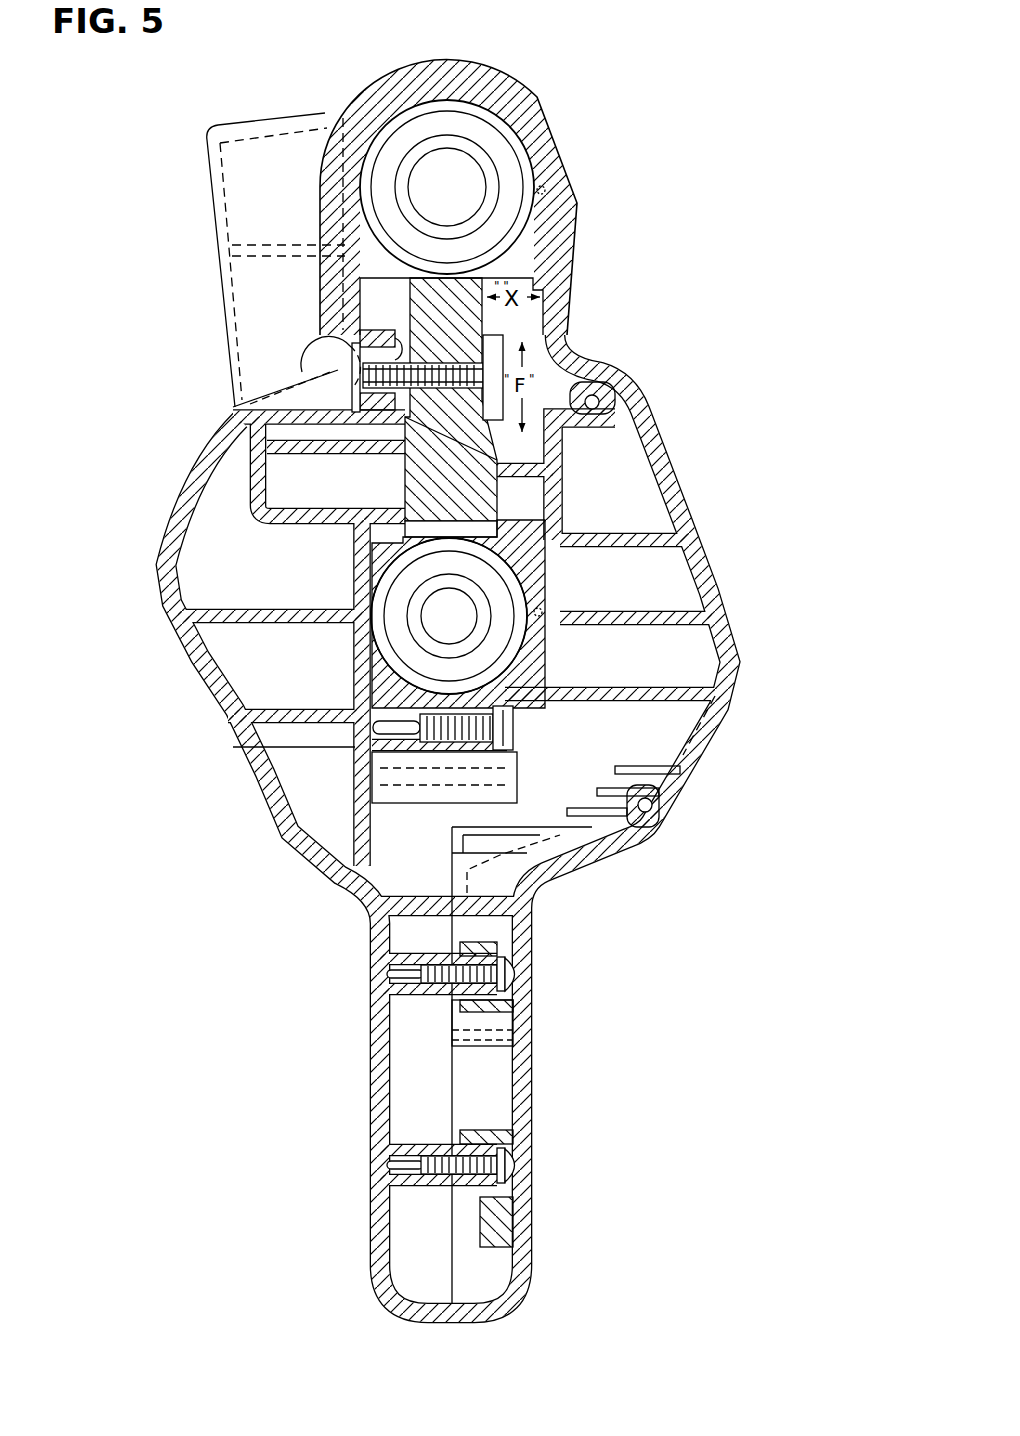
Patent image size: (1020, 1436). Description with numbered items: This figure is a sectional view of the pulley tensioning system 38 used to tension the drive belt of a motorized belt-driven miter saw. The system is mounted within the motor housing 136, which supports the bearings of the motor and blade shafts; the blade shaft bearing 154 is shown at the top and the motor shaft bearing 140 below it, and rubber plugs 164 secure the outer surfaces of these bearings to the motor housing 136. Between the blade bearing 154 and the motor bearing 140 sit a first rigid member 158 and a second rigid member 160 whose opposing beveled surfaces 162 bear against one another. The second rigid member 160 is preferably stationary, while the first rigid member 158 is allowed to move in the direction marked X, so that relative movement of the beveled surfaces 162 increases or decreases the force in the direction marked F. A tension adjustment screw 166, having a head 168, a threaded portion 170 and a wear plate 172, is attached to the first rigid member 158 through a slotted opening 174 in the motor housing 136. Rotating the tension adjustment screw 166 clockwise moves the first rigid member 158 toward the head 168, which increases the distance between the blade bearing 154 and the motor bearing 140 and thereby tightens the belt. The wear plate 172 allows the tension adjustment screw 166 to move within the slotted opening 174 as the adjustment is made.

The pulley tensioning system 38 is at (650, 343).
The motor housing 136 is at (695, 540).
The motor shaft bearing 140 is at (522, 578).
The blade shaft bearing 154 is at (480, 113).
The first rigid member 158 is at (413, 303).
The second rigid member 160 is at (405, 486).
The beveled surfaces 162 is at (487, 460).
The rubber plugs 164 is at (542, 188).
The tension adjustment screw 166 is at (317, 352).
The head 168 is at (337, 347).
The threaded portion 170 is at (462, 336).
The wear plate 172 is at (338, 375).
The slotted opening 174 is at (352, 290).